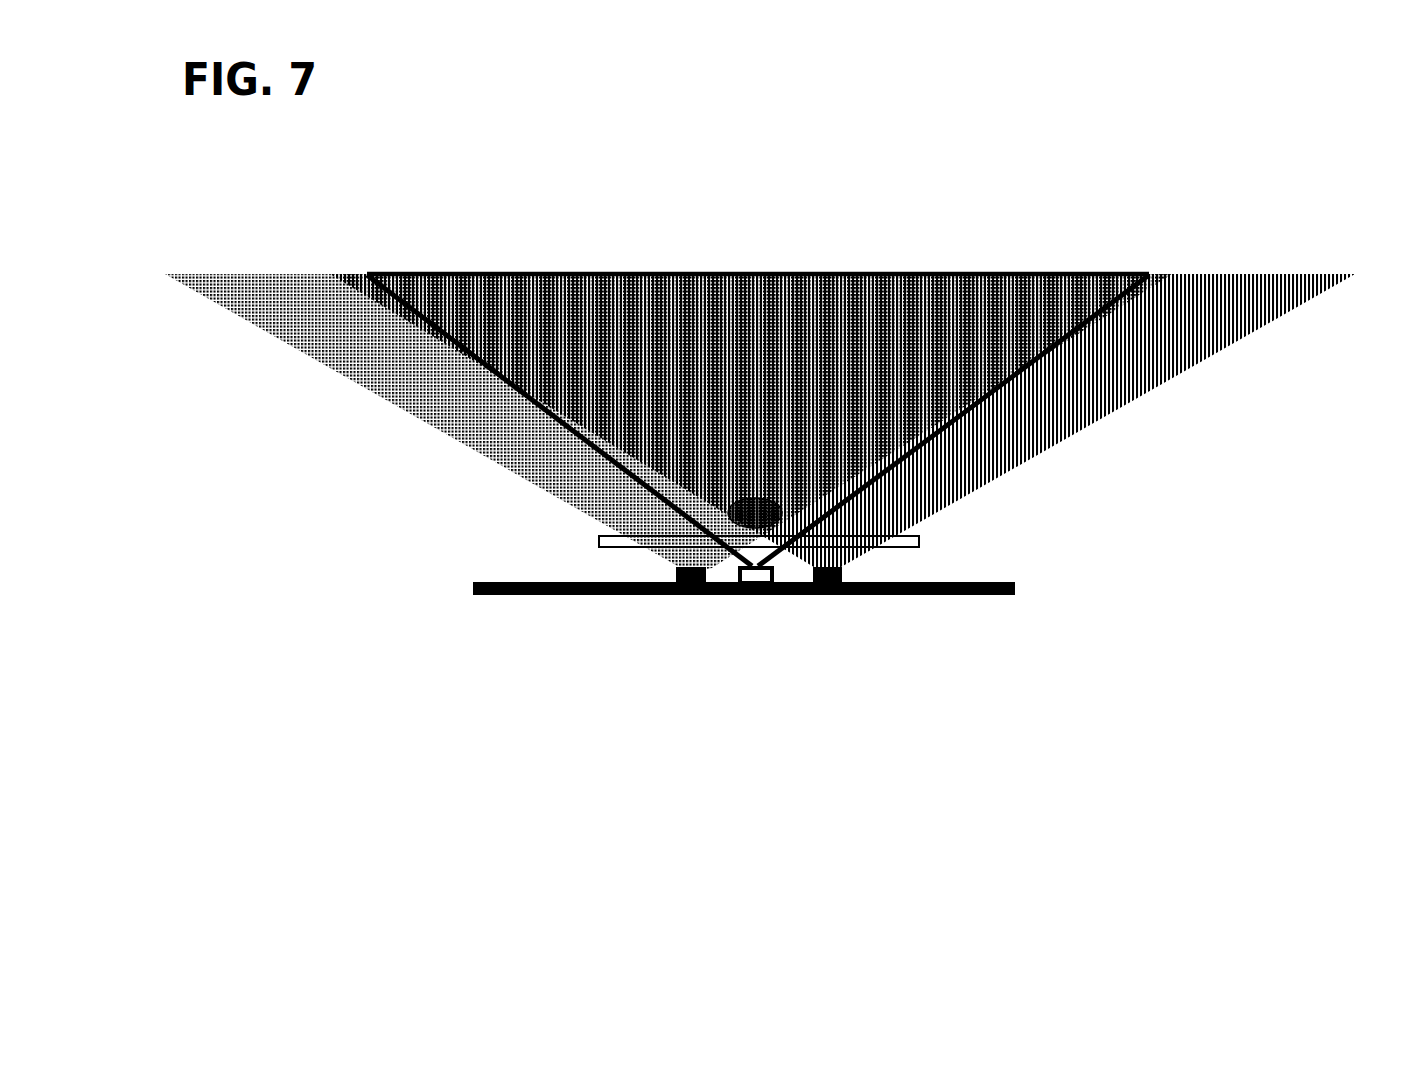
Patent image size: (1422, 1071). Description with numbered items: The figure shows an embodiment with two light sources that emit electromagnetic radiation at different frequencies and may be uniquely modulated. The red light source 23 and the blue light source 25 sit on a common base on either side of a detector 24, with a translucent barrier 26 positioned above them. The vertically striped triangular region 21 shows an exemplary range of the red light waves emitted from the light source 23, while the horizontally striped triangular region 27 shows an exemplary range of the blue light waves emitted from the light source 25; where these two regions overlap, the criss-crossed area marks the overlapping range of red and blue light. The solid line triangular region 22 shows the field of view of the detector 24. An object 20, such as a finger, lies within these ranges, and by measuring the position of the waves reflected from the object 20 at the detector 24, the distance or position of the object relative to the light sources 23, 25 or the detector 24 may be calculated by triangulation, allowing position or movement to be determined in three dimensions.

The object 20 is at (761, 486).
The range of red light waves 21 is at (1372, 471).
The field of view of detector 22 is at (960, 432).
The light source 23 is at (1282, 668).
The detector 24 is at (632, 780).
The light source 25 is at (520, 672).
The translucent barrier 26 is at (578, 536).
The range of blue light waves 27 is at (416, 427).